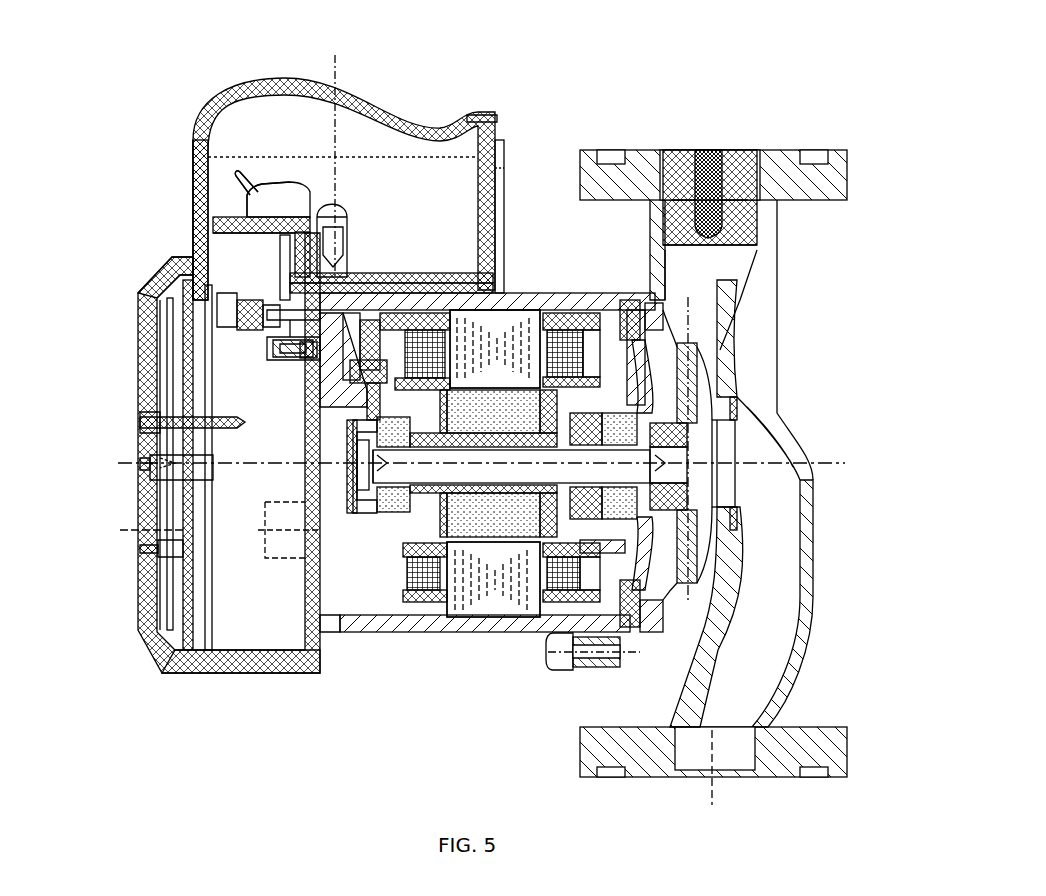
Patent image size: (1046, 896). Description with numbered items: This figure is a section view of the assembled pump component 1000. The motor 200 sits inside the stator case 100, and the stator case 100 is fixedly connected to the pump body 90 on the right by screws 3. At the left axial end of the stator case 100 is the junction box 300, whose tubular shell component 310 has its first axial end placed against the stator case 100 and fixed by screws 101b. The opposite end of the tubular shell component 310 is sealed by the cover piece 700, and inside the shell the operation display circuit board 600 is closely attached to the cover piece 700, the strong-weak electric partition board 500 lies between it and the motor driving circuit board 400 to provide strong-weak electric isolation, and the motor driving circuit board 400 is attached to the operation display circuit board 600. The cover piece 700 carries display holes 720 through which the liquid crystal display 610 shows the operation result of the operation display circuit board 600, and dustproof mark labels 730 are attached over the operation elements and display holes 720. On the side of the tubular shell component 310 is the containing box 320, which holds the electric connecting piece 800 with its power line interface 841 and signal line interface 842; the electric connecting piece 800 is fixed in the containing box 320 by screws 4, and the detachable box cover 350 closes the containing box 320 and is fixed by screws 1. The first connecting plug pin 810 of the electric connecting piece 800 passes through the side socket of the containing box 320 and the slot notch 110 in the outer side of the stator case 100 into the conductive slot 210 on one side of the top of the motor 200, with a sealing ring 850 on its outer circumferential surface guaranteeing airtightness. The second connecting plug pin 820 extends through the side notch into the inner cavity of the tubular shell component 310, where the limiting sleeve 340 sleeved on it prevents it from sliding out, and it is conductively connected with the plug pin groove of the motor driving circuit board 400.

The screws 1 is at (500, 138).
The screws 3 is at (555, 665).
The screws 4 is at (310, 165).
The pump housing 90 is at (832, 296).
The stator case 100 is at (560, 292).
The screws 101b is at (285, 365).
The slot notch 110 is at (418, 277).
The motor 200 is at (580, 298).
The conductive slot 210 is at (463, 291).
The junction box 300 is at (135, 212).
The tubular shell component 310 is at (268, 685).
The containing box 320 is at (190, 192).
The limiting sleeve 340 is at (138, 292).
The detachable box cover 350 is at (380, 110).
The motor driving circuit board 400 is at (167, 325).
The strong-weak electric partition board 500 is at (183, 348).
The operation display circuit board 600 is at (205, 376).
The liquid crystal display 610 is at (150, 470).
The cover piece 700 is at (140, 280).
The display holes 720 is at (140, 556).
The dustproof mark labels 730 is at (140, 408).
The electric connecting piece 800 is at (287, 185).
The first connecting plug pin 810 is at (370, 292).
The second connecting plug pin 820 is at (235, 300).
The power line interface 841 is at (272, 182).
The signal line interface 842 is at (268, 199).
The sealing ring 850 is at (392, 292).
The pump component 1000 is at (672, 93).